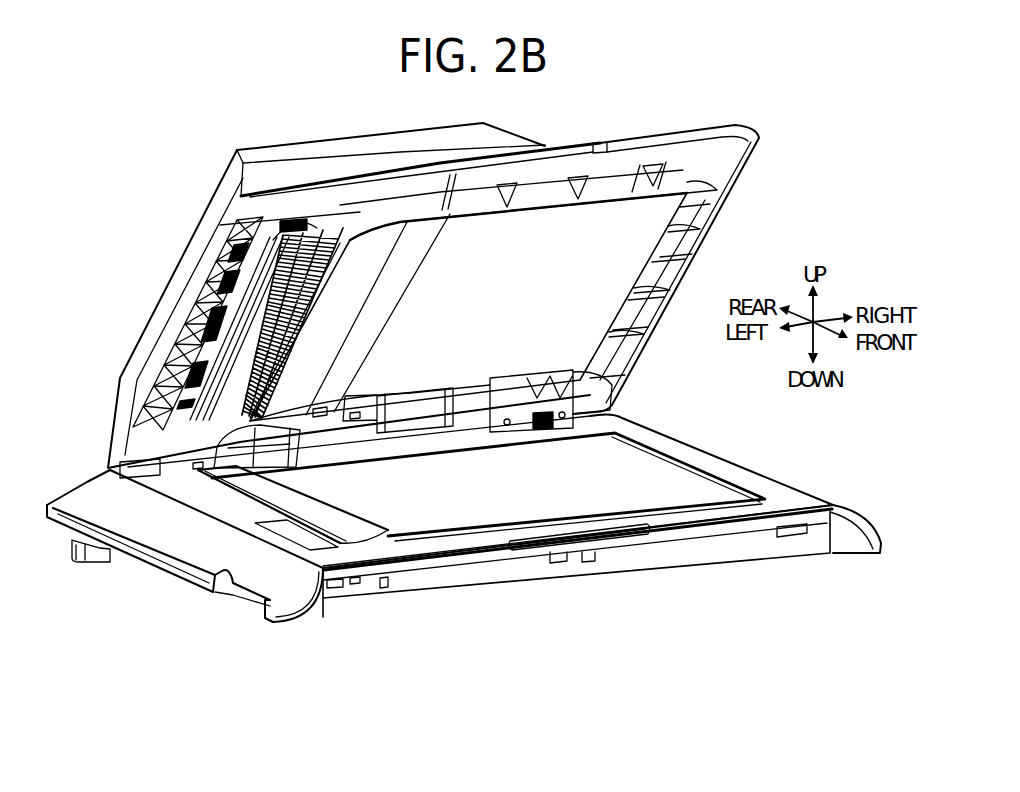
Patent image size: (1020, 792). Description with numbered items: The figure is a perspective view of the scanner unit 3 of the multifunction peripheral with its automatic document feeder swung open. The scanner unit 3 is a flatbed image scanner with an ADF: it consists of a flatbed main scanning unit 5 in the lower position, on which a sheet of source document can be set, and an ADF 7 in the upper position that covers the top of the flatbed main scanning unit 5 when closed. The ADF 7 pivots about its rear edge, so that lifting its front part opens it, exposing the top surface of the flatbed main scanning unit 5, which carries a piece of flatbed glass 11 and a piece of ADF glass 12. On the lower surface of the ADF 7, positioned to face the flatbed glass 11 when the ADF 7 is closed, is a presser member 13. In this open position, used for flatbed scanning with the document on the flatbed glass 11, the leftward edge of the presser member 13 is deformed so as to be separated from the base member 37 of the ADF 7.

The scanner unit 3 is at (588, 104).
The flatbed main scanning unit 5 is at (88, 482).
The ADF 7 is at (740, 131).
The flatbed glass 11 is at (693, 481).
The ADF glass 12 is at (358, 535).
The presser member 13 is at (606, 300).
The base member 37 is at (348, 218).